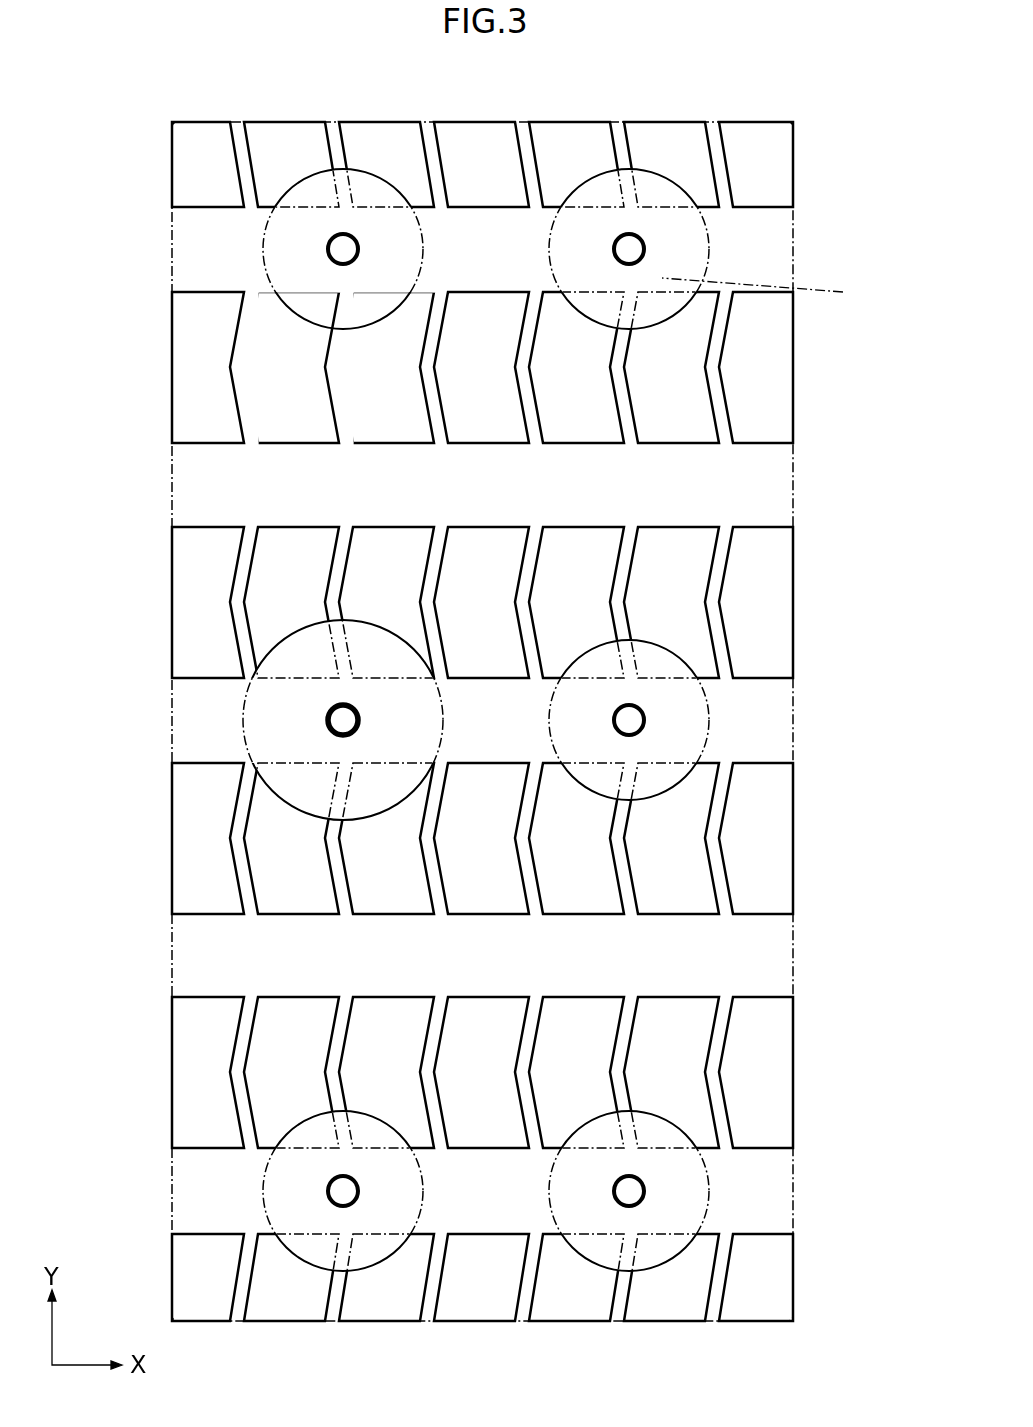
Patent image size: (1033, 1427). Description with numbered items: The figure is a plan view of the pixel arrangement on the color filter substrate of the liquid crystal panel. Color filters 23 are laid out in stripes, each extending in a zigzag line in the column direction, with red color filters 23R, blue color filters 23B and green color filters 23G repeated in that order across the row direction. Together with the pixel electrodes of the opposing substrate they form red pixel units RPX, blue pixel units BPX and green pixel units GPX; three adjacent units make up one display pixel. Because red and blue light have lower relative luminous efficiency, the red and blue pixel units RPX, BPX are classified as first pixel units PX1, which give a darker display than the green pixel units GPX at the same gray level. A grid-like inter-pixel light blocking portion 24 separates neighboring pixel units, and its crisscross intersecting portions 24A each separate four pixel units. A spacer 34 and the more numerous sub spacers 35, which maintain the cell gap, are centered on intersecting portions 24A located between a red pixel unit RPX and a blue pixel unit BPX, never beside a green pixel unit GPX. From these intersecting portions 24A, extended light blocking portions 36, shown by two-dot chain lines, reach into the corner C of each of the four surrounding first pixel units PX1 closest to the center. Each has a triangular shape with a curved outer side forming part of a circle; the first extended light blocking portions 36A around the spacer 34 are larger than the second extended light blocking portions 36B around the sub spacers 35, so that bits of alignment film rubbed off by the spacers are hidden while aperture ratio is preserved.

The color filter 23 is at (415, 679).
The red color filter 23R is at (270, 307).
The green color filter 23G is at (462, 310).
The blue color filter 23B is at (375, 423).
The inter-pixel light blocking portion 24 is at (575, 450).
The intersecting portion 24A is at (345, 223).
The spacer 34 is at (325, 720).
The sub spacer 35 is at (326, 249).
The extended light blocking portion 36 is at (404, 656).
The first extended light blocking portion 36A is at (378, 662).
The second extended light blocking portion 36B is at (370, 178).
The first pixel unit PX1 is at (88, 283).
The red pixel unit RPX is at (282, 335).
The blue pixel unit BPX is at (367, 397).
The green pixel unit GPX is at (490, 314).
The corner C is at (700, 315).